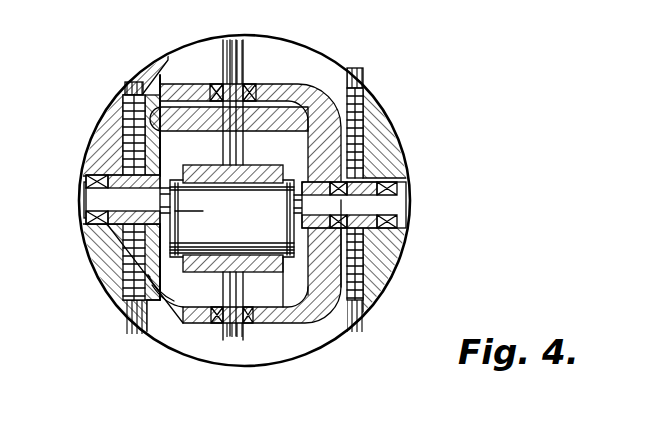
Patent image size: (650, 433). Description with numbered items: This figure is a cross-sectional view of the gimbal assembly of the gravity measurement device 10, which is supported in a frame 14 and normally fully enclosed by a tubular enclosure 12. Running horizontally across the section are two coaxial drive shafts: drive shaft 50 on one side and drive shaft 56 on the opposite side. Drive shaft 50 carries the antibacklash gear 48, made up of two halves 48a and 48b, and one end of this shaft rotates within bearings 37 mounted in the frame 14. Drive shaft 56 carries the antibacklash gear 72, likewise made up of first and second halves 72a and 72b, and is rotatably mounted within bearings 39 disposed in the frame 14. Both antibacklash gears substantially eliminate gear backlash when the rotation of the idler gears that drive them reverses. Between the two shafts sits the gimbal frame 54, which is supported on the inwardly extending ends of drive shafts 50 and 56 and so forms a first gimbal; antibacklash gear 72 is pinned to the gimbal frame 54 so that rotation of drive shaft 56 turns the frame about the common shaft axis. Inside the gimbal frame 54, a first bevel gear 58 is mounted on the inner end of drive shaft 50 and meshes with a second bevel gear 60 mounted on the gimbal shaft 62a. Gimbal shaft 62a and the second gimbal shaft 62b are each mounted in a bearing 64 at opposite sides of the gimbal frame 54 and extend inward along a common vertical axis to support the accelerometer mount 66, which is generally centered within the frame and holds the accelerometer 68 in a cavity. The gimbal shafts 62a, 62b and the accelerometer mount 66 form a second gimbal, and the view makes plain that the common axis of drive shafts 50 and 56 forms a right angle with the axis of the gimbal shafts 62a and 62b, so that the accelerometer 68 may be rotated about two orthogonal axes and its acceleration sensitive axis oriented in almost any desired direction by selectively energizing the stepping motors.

The gravity measurement device 10 is at (121, 333).
The tubular enclosure 12 is at (350, 315).
The frame 14 is at (117, 263).
The bearings 37 is at (390, 190).
The bearings 39 is at (92, 168).
The antibacklash gear 48 is at (378, 163).
The first half of antibacklash gear 48a is at (348, 98).
The second half of antibacklash gear 48b is at (362, 88).
The drive shaft 50 is at (405, 205).
The gimbal frame 54 is at (181, 320).
The drive shaft 56 is at (86, 204).
The first bevel gear 58 is at (307, 268).
The second bevel gear 60 is at (283, 117).
The gimbal shaft 62a is at (240, 112).
The second gimbal shaft 62b is at (227, 312).
The bearing 64 is at (246, 96).
The accelerometer mount 66 is at (197, 165).
The accelerometer 68 is at (283, 265).
The antibacklash gear 72 is at (106, 250).
The first half of antibacklash gear 72a is at (136, 92).
The second half of antibacklash gear 72b is at (128, 92).